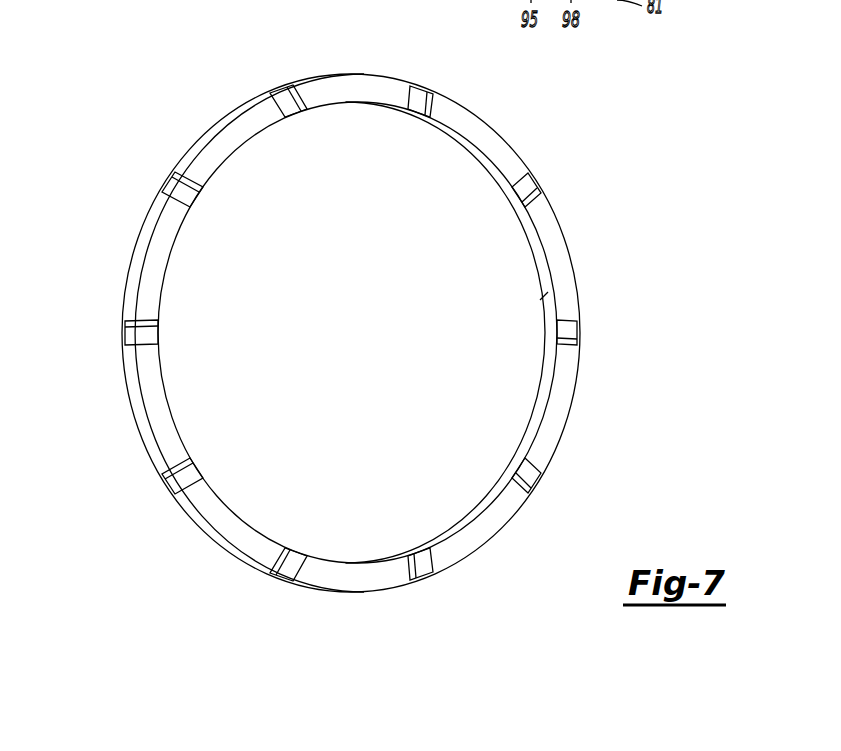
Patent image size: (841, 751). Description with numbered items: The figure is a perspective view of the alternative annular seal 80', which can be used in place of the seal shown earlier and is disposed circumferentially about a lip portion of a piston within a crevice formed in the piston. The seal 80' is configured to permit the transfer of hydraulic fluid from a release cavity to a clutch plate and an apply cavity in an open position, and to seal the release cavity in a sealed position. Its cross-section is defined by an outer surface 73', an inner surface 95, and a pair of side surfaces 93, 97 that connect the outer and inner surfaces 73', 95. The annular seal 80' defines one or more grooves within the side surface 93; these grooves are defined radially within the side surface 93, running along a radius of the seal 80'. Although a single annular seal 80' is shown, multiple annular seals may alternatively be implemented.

The outer surface 73' is at (383, 333).
The annular seal 80' is at (690, 308).
The side surface 93 is at (560, 267).
The inner surface 95 is at (548, 292).
The side surface 97 is at (535, 258).